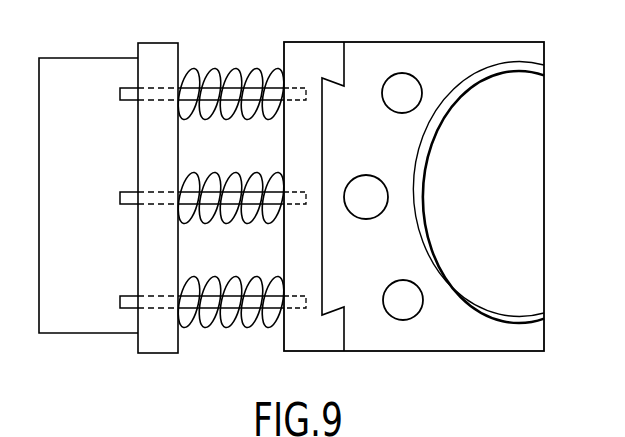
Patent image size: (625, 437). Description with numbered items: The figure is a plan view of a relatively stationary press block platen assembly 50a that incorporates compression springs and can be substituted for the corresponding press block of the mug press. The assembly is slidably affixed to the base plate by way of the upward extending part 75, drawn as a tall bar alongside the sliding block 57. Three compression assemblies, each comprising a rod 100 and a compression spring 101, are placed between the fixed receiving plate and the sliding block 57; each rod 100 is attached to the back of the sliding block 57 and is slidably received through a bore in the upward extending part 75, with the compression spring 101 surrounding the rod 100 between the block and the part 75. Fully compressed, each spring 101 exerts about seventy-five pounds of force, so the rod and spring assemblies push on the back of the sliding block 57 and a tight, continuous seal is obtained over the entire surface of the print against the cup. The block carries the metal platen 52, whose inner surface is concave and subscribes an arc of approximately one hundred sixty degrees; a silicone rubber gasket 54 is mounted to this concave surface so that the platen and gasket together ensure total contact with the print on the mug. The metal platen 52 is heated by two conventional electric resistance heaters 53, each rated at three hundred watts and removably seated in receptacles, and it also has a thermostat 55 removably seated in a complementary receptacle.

The upward extending part 75 is at (160, 43).
The rod 100 is at (118, 94).
The compression spring 101 is at (228, 78).
The platen assembly 50a is at (398, 223).
The metal platen 52 is at (379, 153).
The electric resistance heater 53 is at (420, 76).
The silicone rubber gasket 54 is at (448, 128).
The thermostat 55 is at (358, 219).
The sliding block 57 is at (313, 339).